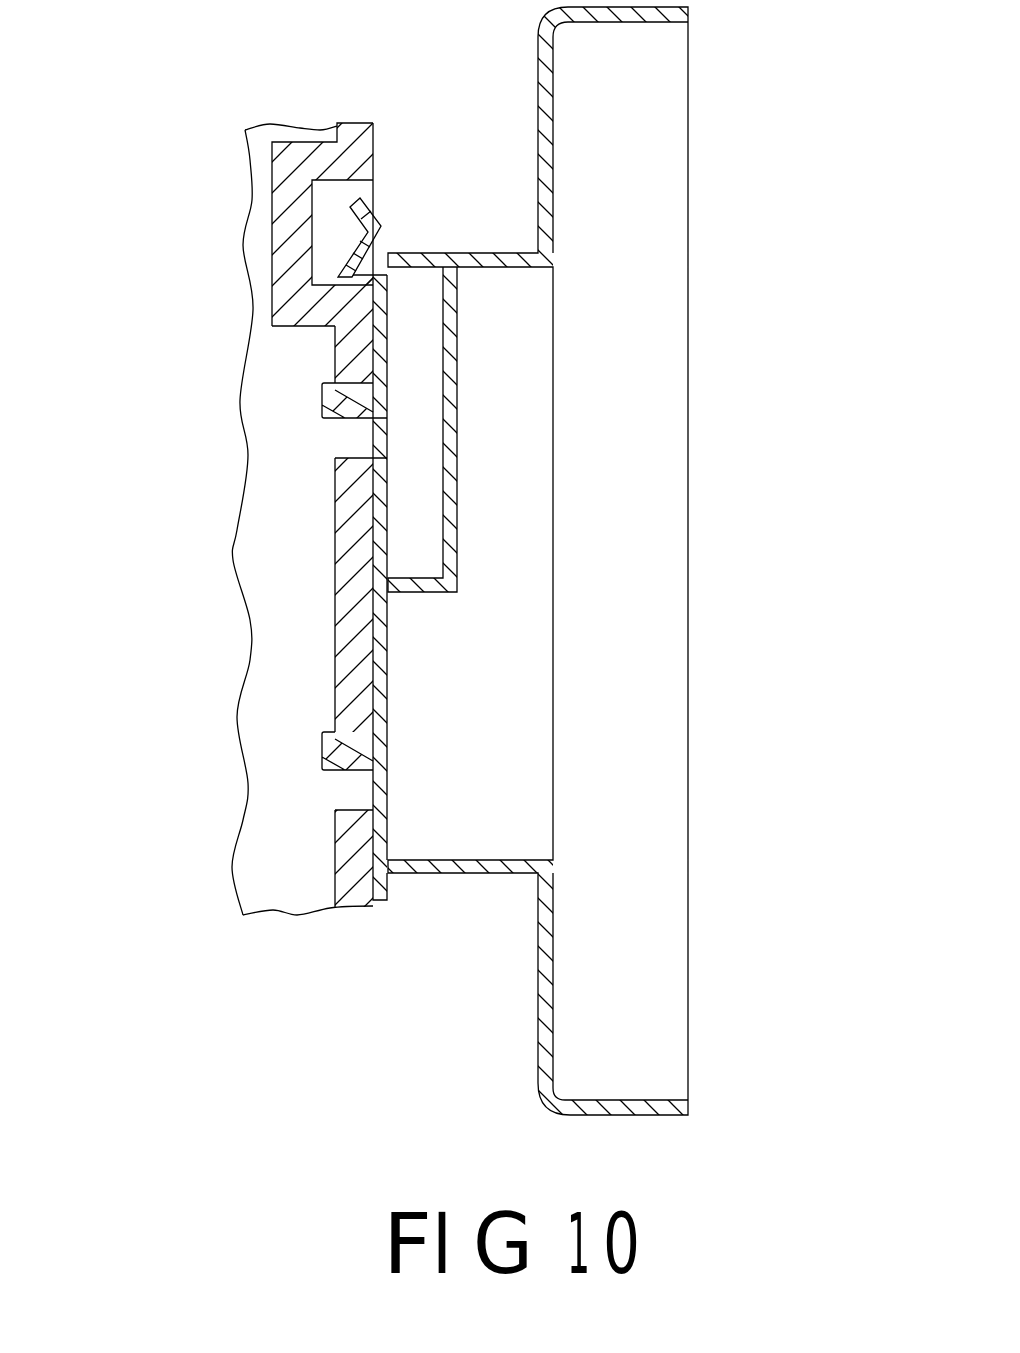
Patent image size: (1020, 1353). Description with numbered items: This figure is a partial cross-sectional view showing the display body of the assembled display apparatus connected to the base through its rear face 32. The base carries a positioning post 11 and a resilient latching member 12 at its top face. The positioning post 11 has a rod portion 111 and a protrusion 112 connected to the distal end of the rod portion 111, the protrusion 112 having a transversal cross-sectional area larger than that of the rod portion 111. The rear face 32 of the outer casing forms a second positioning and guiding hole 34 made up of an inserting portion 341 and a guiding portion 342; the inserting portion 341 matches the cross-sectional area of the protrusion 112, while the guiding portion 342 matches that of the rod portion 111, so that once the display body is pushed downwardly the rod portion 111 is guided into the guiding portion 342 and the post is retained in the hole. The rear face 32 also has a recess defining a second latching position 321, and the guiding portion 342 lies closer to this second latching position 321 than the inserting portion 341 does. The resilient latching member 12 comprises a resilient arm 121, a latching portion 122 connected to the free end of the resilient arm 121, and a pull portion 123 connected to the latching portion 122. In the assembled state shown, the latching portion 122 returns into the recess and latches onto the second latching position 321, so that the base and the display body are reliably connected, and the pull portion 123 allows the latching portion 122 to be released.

The positioning post 11 is at (212, 519).
The rod portion 111 is at (337, 425).
The protrusion 112 is at (337, 402).
The resilient latching member 12 is at (828, 182).
The resilient arm 121 is at (388, 306).
The latching portion 122 is at (377, 275).
The pull portion 123 is at (363, 214).
The rear face 32 is at (256, 191).
The second latching position 321 is at (327, 228).
The second positioning and guiding hole 34 is at (632, 429).
The inserting portion 341 is at (368, 450).
The guiding portion 342 is at (367, 425).